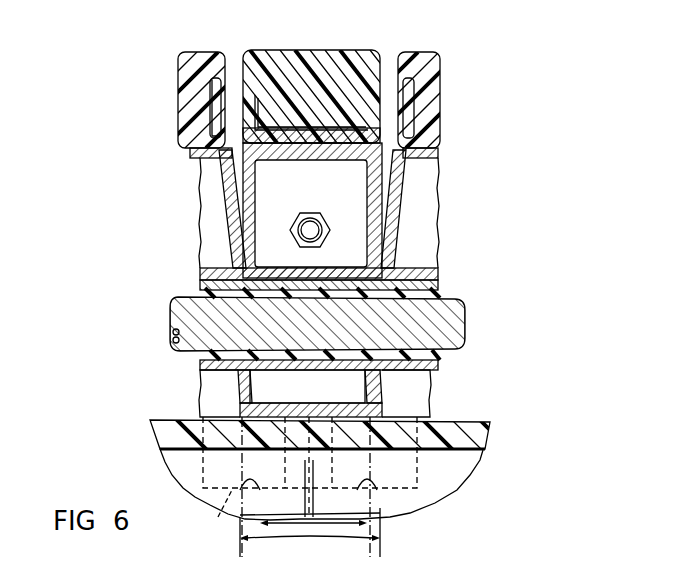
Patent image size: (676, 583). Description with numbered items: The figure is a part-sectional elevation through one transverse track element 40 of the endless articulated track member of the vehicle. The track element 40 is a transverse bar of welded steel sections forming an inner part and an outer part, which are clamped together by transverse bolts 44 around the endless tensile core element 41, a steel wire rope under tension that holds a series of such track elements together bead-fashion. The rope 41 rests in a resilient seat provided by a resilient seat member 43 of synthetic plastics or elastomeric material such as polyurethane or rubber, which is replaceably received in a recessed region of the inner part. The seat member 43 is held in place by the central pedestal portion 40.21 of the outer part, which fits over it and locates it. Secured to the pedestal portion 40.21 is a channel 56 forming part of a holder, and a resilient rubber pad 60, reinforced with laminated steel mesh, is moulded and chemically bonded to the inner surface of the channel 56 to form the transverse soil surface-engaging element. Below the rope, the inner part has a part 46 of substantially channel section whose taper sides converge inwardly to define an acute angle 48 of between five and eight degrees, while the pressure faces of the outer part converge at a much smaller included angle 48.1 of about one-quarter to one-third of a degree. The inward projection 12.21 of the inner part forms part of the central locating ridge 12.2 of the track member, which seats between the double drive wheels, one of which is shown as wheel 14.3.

The track element 40 is at (258, 45).
The resilient pad 60 is at (351, 50).
The channel 56 is at (248, 145).
The central pedestal portion 40.21 is at (468, 186).
The transverse bolt 44 is at (341, 217).
The tensile core element 41 is at (445, 312).
The resilient seat member 43 is at (442, 356).
The channel section part 46 is at (252, 386).
The double wheel 14.3 is at (452, 417).
The included angle 48.1 is at (345, 518).
The central locating ridge 12.2 is at (322, 523).
The acute angle 48 is at (292, 540).
The inward projection 12.21 is at (244, 513).